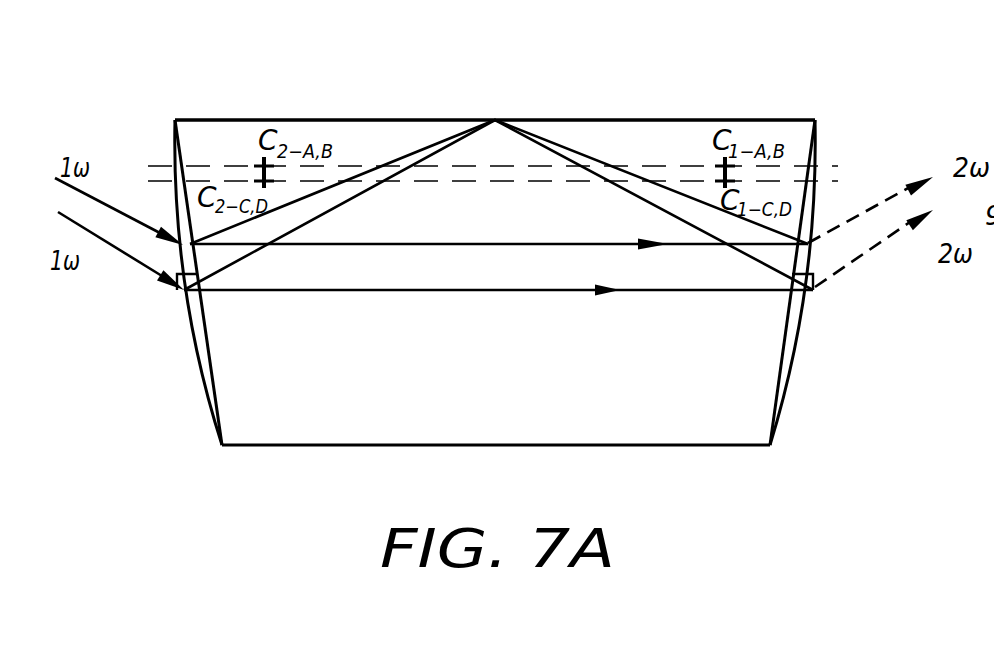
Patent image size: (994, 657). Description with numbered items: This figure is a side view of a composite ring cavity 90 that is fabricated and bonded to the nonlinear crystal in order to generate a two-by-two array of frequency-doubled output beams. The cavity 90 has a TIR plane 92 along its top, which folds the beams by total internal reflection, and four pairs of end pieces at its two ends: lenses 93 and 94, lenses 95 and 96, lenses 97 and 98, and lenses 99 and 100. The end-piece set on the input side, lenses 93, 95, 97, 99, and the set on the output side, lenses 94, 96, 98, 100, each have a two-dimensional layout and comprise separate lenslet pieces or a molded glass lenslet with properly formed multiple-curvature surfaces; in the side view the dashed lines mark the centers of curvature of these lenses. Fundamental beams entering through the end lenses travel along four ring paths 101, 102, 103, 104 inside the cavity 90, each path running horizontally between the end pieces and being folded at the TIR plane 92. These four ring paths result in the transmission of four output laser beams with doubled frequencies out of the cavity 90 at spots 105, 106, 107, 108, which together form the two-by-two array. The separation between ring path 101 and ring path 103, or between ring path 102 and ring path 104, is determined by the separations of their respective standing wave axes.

The composite ring cavity 90 is at (482, 88).
The TIR plane 92 is at (686, 119).
The end piece lens 93 is at (158, 282).
The end piece lens 95 is at (173, 200).
The end piece lens 94 is at (828, 267).
The end piece lens 96 is at (820, 152).
The end piece lens 97 is at (152, 282).
The end piece lens 99 is at (197, 353).
The end piece lens 98 is at (850, 282).
The end piece lens 100 is at (792, 352).
The ring path 101 is at (499, 262).
The ring path 102 is at (521, 248).
The ring path 103 is at (498, 308).
The ring path 104 is at (518, 296).
The output spot 105 is at (873, 183).
The output spot 106 is at (807, 243).
The output spot 107 is at (887, 278).
The output spot 108 is at (808, 325).